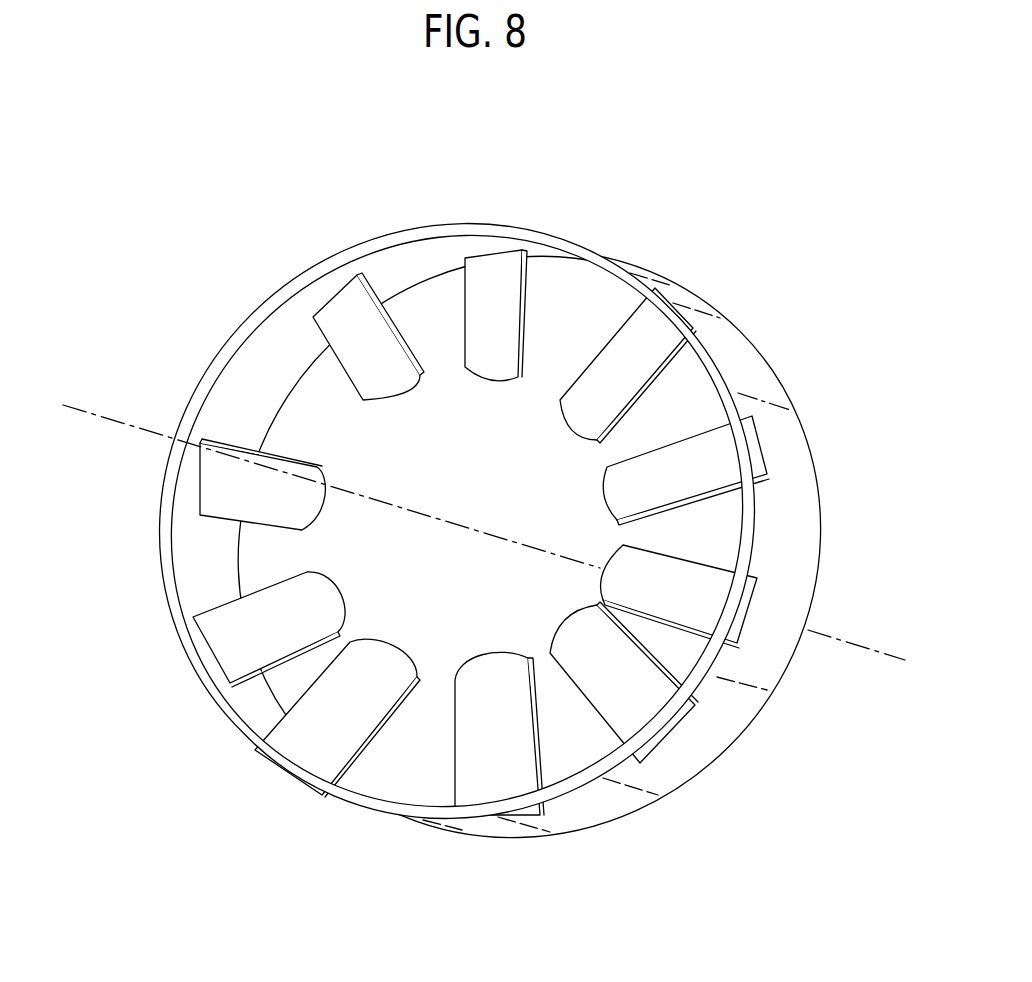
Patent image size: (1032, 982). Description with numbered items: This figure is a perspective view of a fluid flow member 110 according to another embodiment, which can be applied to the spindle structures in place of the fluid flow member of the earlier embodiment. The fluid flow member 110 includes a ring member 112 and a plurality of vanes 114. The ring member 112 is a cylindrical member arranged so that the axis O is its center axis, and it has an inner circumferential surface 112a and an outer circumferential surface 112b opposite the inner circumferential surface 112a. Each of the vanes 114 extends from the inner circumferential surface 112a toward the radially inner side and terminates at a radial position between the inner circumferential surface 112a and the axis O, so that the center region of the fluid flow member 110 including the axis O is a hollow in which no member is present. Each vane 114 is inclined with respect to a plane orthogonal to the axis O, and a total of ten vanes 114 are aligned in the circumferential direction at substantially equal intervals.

The fluid flow member 110 is at (492, 532).
The ring member 112 is at (700, 745).
The inner circumferential surface 112a is at (253, 420).
The outer circumferential surface 112b is at (613, 797).
The vanes 114 is at (567, 635).
The axis O is at (83, 410).